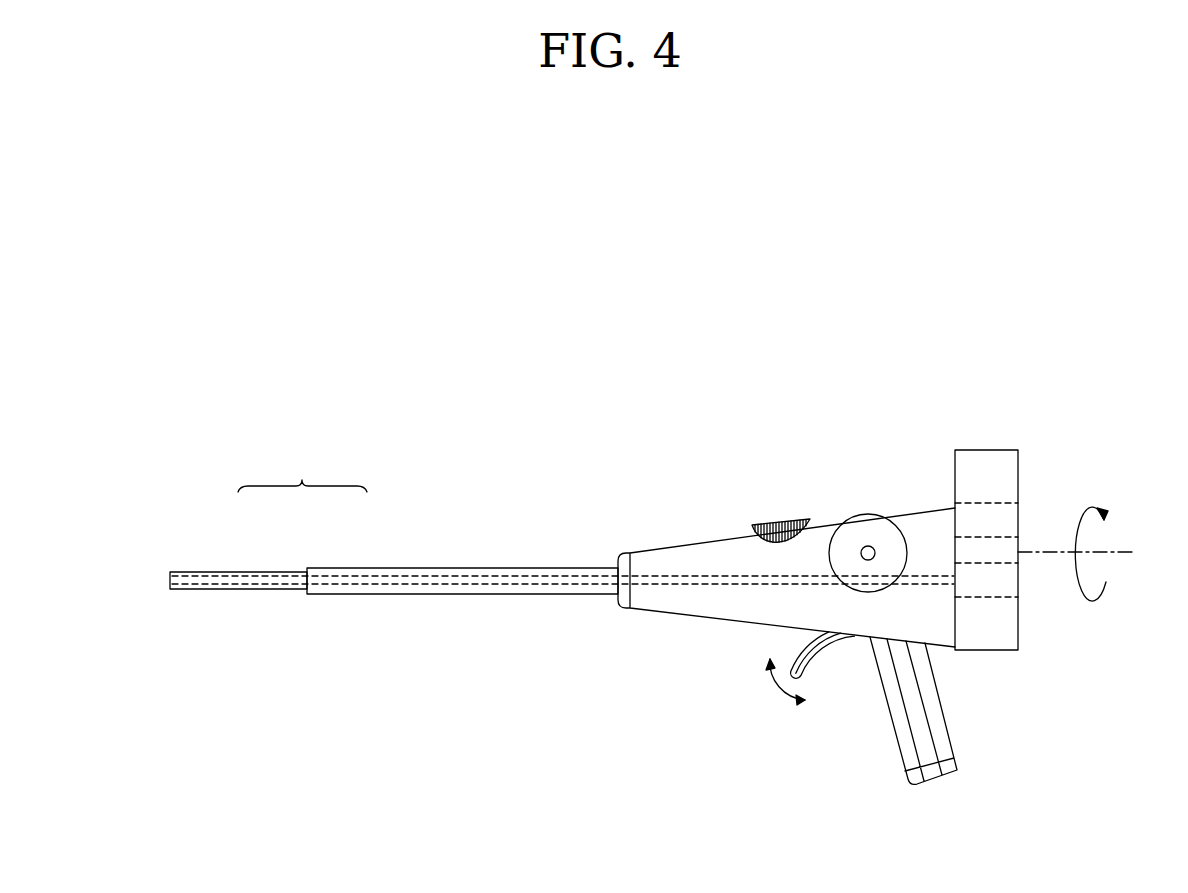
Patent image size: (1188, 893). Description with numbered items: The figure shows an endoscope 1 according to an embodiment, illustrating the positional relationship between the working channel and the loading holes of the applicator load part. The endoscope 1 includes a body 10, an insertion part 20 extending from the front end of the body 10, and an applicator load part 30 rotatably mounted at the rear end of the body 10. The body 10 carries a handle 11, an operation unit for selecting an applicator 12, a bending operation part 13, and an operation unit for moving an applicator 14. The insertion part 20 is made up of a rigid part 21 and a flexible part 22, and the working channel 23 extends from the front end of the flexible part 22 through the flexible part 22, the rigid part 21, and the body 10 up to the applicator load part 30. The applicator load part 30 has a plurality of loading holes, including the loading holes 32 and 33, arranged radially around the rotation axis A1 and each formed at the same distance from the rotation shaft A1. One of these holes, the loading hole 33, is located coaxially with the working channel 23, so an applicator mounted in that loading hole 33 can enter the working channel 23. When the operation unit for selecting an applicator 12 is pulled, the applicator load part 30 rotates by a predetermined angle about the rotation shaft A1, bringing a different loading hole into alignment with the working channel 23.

The endoscope 1 is at (609, 273).
The body 10 is at (673, 611).
The handle 11 is at (905, 749).
The operation unit for selecting an applicator 12 is at (830, 667).
The bending operation part 13 is at (866, 529).
The operation unit for moving an applicator 14 is at (780, 520).
The insertion part 20 is at (302, 469).
The rigid part 21 is at (343, 567).
The flexible part 22 is at (258, 571).
The working channel 23 is at (671, 575).
The applicator load part 30 is at (1020, 468).
The loading hole 32 is at (985, 502).
The loading hole 33 is at (990, 599).
The rotation axis A1 is at (1095, 554).